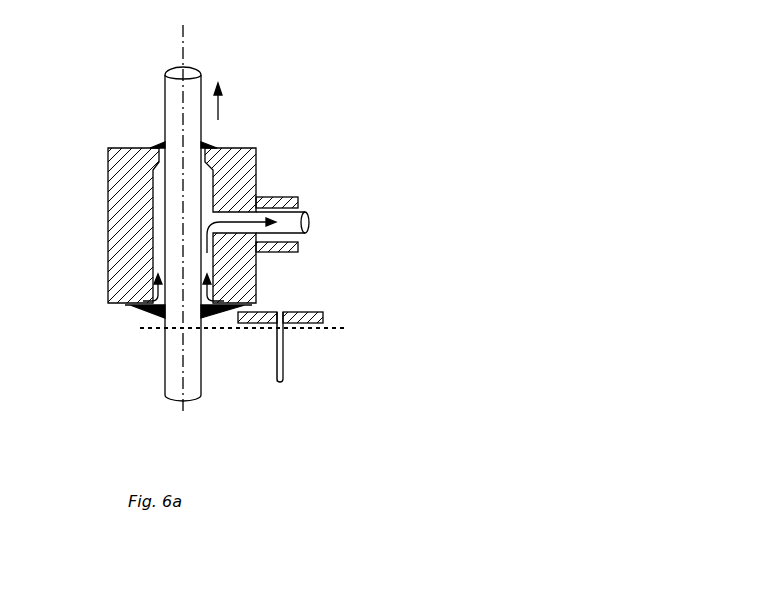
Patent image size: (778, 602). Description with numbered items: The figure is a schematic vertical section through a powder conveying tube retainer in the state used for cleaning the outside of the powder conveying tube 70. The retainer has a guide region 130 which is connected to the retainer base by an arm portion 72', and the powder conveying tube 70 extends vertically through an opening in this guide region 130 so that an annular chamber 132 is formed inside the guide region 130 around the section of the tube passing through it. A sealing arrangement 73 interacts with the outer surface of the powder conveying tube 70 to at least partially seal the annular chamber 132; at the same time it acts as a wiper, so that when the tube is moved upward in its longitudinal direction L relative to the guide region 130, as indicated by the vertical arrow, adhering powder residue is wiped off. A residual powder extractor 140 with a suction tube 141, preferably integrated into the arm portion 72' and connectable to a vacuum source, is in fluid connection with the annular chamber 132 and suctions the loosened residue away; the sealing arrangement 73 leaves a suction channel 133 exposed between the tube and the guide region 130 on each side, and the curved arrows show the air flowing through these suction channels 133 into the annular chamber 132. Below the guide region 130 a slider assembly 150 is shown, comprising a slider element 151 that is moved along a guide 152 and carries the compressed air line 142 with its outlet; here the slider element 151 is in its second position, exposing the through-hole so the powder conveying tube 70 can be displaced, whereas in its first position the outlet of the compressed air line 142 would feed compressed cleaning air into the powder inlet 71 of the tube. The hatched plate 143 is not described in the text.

The powder conveying tube 70 is at (170, 95).
The powder inlet 71 is at (180, 393).
The sealing arrangement 73 is at (160, 147).
The guide region 130 is at (125, 235).
The annular chamber 132 is at (212, 182).
The suction channel 133 is at (152, 305).
The arm portion 72' is at (290, 206).
The residual powder extractor 140 is at (287, 227).
The suction tube 141 is at (277, 247).
The plate 143 is at (290, 312).
The slider element 151 is at (323, 322).
The compressed air line 142 is at (283, 363).
The slider assembly 150 is at (362, 354).
The guide 152 is at (222, 327).
The longitudinal direction L is at (178, 347).